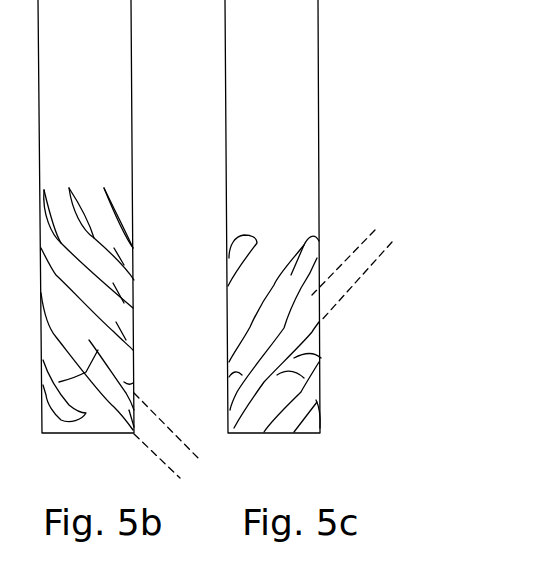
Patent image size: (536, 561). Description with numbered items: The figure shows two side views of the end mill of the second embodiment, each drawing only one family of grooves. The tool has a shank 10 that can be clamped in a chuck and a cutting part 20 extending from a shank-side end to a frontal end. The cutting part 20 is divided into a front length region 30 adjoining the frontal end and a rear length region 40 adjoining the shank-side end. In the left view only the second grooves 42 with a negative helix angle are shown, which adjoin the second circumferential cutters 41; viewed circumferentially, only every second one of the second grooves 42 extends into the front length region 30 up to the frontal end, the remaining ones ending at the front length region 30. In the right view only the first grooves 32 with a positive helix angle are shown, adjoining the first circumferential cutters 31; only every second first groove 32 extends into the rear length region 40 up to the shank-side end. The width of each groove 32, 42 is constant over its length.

In FIG. 5C, the shank 10 is at (408, 160).
In FIG. 5C, the cutting part 20 is at (470, 198).
In FIG. 5C, the front length region 30 is at (418, 353).
In FIG. 5C, the rear length region 40 is at (418, 198).
In FIG. 5C, the first circumferential cutter 31 is at (318, 350).
In FIG. 5C, the first groove 32 is at (373, 220).
In FIG. 5B, the second circumferential cutter 41 is at (89, 341).
In FIG. 5B, the second groove 42 is at (212, 432).